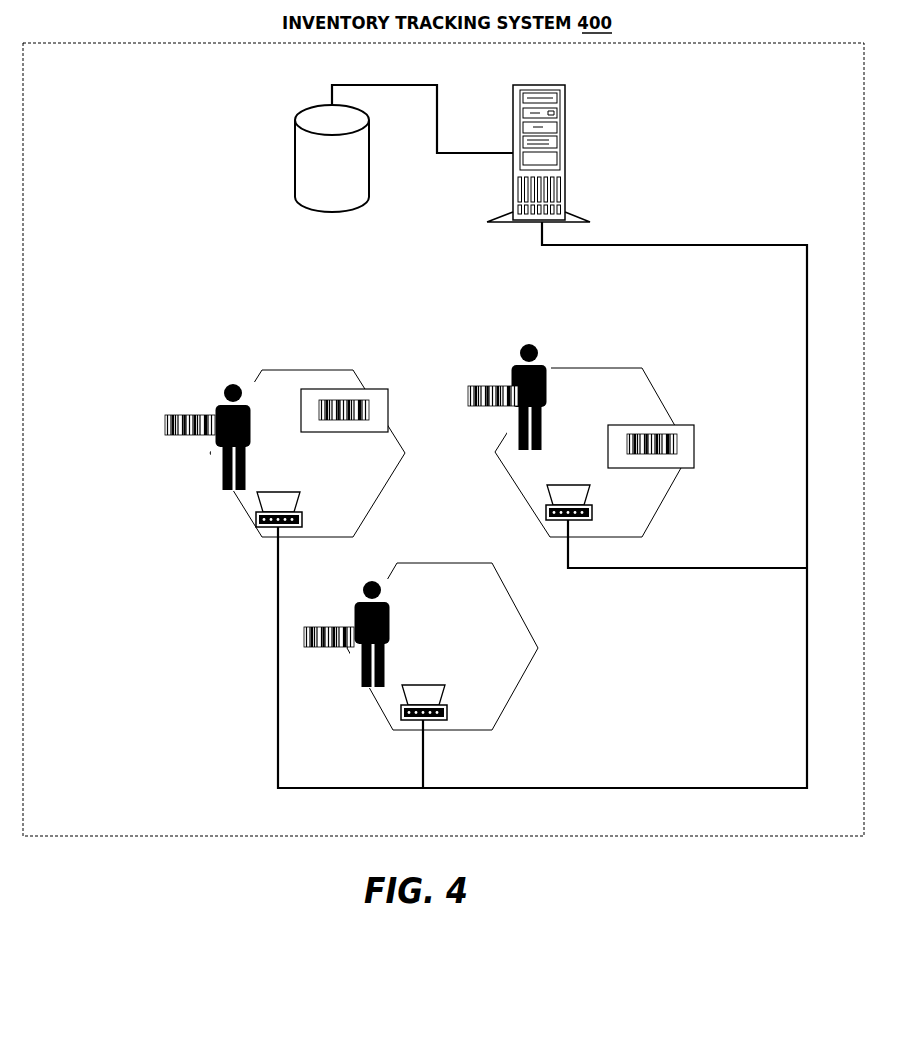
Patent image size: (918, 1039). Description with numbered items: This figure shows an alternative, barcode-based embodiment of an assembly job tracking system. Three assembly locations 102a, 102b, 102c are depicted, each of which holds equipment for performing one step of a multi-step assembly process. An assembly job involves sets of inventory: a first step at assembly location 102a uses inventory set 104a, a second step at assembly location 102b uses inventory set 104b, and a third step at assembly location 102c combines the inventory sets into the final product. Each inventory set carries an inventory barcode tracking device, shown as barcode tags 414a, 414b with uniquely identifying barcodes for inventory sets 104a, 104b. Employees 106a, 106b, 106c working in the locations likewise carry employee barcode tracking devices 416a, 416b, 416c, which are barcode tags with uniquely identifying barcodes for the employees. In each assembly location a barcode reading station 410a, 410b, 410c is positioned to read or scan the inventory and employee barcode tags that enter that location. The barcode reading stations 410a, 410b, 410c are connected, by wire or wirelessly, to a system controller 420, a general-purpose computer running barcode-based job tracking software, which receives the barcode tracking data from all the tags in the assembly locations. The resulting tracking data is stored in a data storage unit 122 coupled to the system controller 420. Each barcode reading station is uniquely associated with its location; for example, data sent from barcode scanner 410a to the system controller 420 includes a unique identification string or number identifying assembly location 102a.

The data storage unit 122 is at (293, 152).
The system controller 420 is at (565, 97).
The assembly location 102a is at (352, 531).
The assembly location 102b is at (640, 531).
The assembly location 102c is at (492, 726).
The inventory set 104a is at (388, 408).
The inventory set 104b is at (694, 435).
The employee 106a is at (235, 490).
The employee 106b is at (532, 451).
The employee 106c is at (380, 588).
The barcode reading station 410a is at (256, 527).
The barcode reading station 410b is at (547, 520).
The barcode reading station 410c is at (400, 718).
The inventory barcode tracking device 414a is at (316, 410).
The inventory barcode tracking device 414b is at (623, 443).
The employee barcode tracking device 416a is at (190, 436).
The employee barcode tracking device 416b is at (467, 398).
The employee barcode tracking device 416c is at (332, 648).